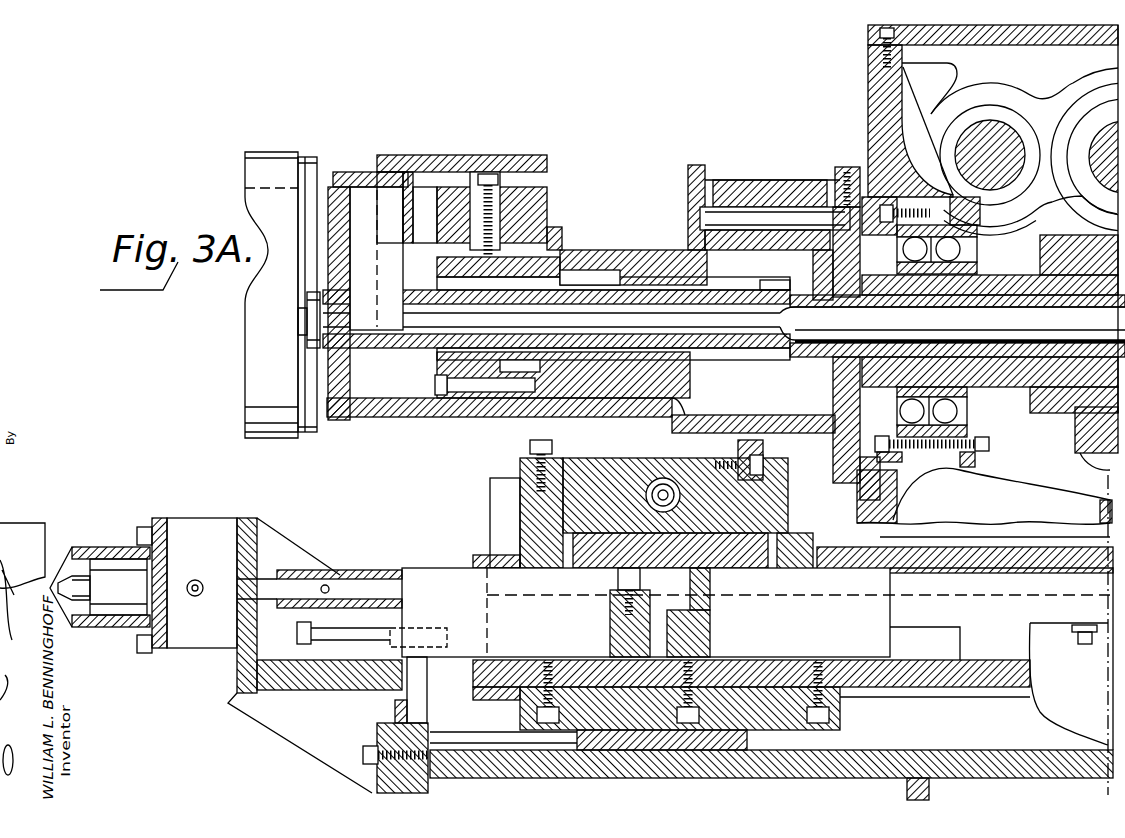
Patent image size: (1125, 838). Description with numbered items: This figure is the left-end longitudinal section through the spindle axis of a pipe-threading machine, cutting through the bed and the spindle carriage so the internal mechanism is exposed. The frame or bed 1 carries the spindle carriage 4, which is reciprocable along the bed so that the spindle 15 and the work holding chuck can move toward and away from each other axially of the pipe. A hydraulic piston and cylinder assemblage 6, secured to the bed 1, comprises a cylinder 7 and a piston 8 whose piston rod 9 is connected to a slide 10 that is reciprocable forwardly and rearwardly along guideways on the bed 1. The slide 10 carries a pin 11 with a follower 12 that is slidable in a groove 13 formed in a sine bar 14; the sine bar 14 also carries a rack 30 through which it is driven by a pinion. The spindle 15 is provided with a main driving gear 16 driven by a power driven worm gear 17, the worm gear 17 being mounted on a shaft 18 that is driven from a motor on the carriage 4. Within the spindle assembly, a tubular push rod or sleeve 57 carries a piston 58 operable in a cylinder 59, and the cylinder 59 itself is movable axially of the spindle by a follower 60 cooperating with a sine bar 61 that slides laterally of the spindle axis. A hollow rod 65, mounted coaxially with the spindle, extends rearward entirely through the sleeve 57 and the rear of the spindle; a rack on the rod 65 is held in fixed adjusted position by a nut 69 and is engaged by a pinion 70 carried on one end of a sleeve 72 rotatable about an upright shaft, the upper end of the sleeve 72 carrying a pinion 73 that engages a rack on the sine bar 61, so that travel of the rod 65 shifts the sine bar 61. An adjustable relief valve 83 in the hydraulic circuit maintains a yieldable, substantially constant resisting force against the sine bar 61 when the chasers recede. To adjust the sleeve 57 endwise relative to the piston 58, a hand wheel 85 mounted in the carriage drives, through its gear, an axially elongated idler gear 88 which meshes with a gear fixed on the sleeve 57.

The frame or bed 1 is at (668, 776).
The spindle carriage 4 is at (868, 78).
The hydraulic piston and cylinder assemblage 6 is at (99, 540).
The cylinder 7 is at (115, 547).
The piston 8 is at (138, 602).
The piston rod 9 is at (292, 655).
The slide 10 is at (757, 635).
The pin 11 is at (712, 612).
The follower 12 is at (605, 568).
The slideway or groove 13 is at (660, 478).
The sine bar 14 is at (562, 512).
The spindle 15 is at (997, 388).
The main driving gear 16 is at (1085, 452).
The worm gear 17 is at (1090, 135).
The shaft 18 is at (1095, 165).
The rack 30 is at (738, 450).
The tubular push rod or sleeve 57 is at (775, 288).
The piston 58 is at (578, 277).
The cylinder 59 is at (645, 257).
The follower 60 is at (547, 200).
The sine bar 61 is at (417, 228).
The hollow rod 65 is at (330, 323).
The nut 69 is at (307, 318).
The pinion 70 is at (390, 348).
The sleeve 72 is at (330, 265).
The pinion 73 is at (336, 172).
The adjustable relief valve 83 is at (812, 380).
The hand wheel 85 is at (282, 438).
The idler gear 88 is at (740, 182).